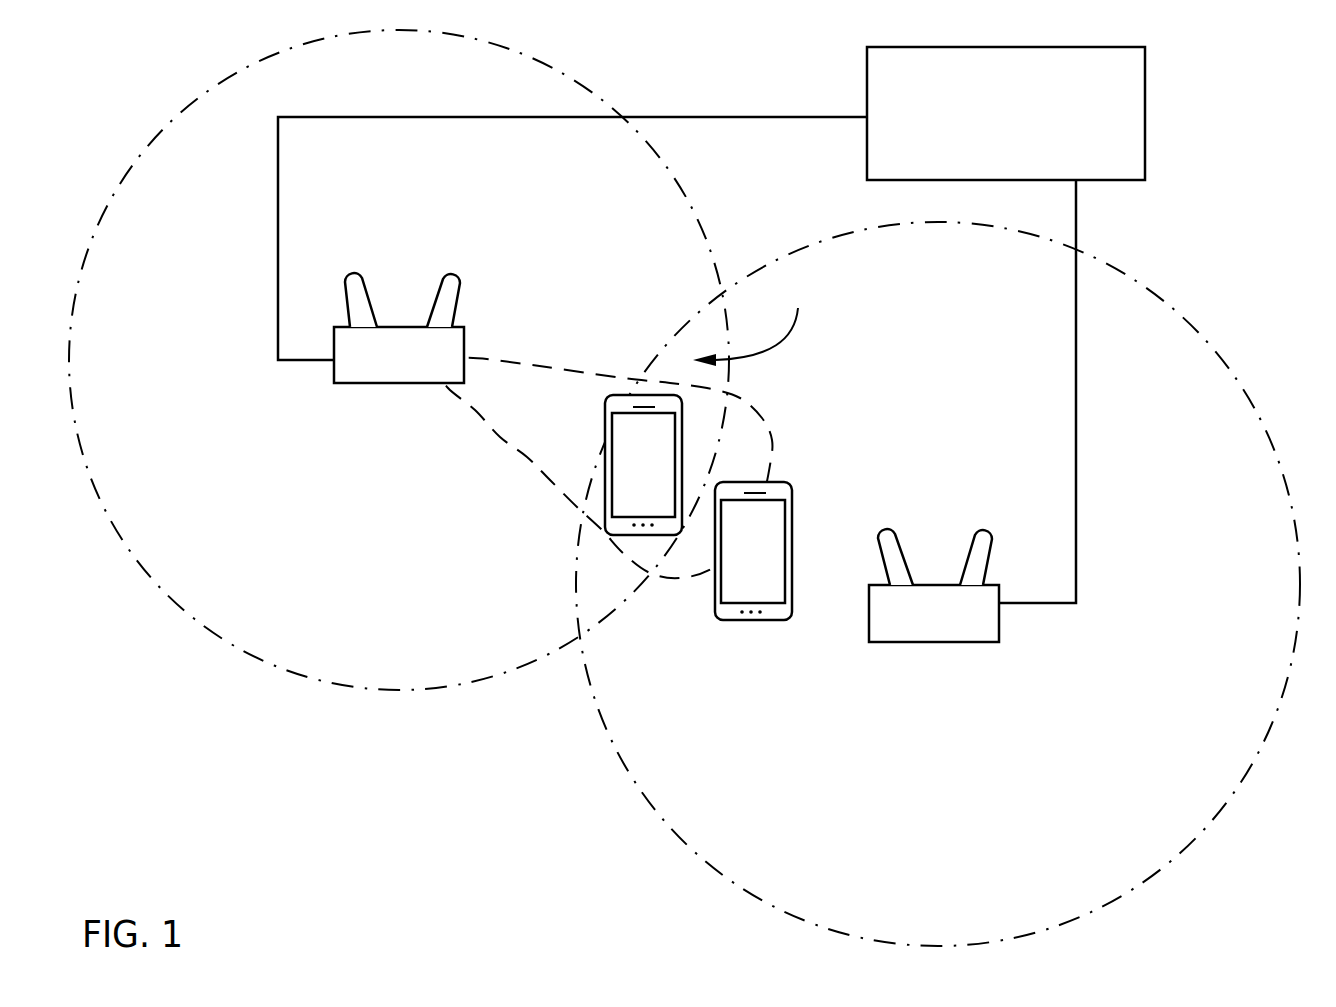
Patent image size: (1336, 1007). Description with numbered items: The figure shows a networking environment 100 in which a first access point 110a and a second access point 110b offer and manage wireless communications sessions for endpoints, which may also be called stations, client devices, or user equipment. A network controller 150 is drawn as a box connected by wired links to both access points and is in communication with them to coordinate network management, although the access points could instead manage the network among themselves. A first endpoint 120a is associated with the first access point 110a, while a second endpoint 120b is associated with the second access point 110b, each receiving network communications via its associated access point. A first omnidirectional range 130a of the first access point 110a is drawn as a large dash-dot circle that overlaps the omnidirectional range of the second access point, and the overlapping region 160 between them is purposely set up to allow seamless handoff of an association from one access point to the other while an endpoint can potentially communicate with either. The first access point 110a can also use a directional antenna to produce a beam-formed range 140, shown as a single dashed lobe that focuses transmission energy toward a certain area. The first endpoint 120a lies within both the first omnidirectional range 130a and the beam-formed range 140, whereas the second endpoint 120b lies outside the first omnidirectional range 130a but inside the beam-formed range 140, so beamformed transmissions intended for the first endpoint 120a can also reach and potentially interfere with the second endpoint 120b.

The networking environment 100 is at (701, 488).
The first access point 110a is at (367, 283).
The second access point 110b is at (893, 534).
The first endpoint 120a is at (605, 426).
The second endpoint 120b is at (792, 522).
The first omnidirectional range 130a is at (698, 219).
The beam-formed range 140 is at (765, 423).
The network controller 150 is at (1023, 138).
The overlapping region 160 is at (754, 324).